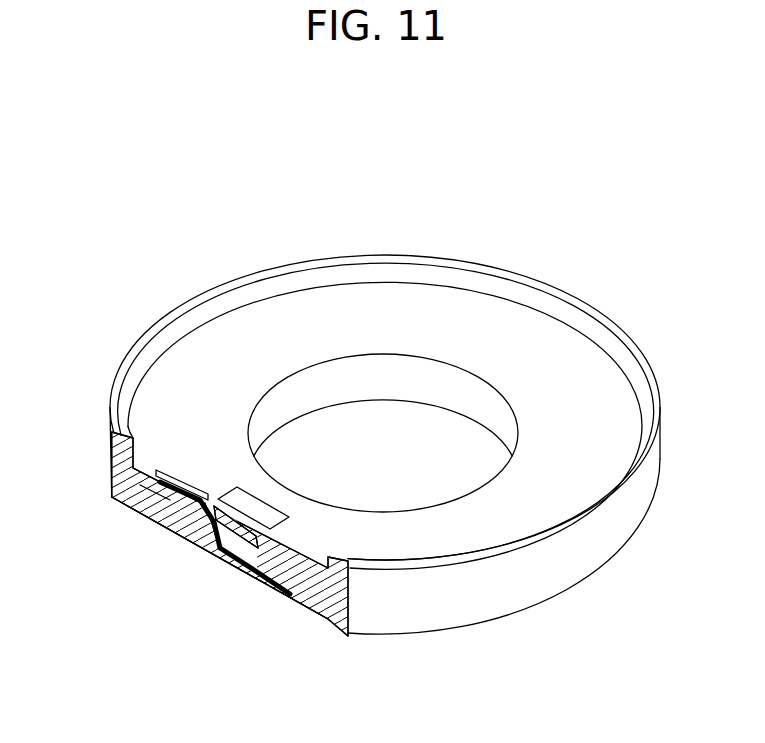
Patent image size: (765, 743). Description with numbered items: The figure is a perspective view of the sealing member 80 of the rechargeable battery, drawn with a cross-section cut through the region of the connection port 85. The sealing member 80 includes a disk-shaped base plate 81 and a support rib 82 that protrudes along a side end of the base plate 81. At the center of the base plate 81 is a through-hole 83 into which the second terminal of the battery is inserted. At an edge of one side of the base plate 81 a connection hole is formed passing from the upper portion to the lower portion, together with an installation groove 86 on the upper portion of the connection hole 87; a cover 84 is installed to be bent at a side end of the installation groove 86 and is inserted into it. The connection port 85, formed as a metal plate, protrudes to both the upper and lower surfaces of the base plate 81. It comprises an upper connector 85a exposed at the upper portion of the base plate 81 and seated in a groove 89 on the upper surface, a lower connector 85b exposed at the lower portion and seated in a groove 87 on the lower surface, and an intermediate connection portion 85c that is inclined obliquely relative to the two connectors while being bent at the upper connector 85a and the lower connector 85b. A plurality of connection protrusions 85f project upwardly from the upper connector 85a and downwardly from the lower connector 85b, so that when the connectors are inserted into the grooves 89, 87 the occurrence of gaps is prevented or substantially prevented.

The sealing member 80 is at (543, 262).
The base plate 81 is at (402, 310).
The support rib 82 is at (180, 312).
The through-hole 83 is at (300, 397).
The cover 84 is at (213, 521).
The connection port 85 is at (165, 465).
The upper connector 85a is at (135, 474).
The lower connector 85b is at (215, 556).
The intermediate connection portion 85c is at (232, 540).
The connection protrusions 85f is at (150, 512).
The installation groove 86 is at (292, 540).
The groove (lower surface) / connection hole 87 is at (273, 596).
The groove (upper surface) 89 is at (165, 535).